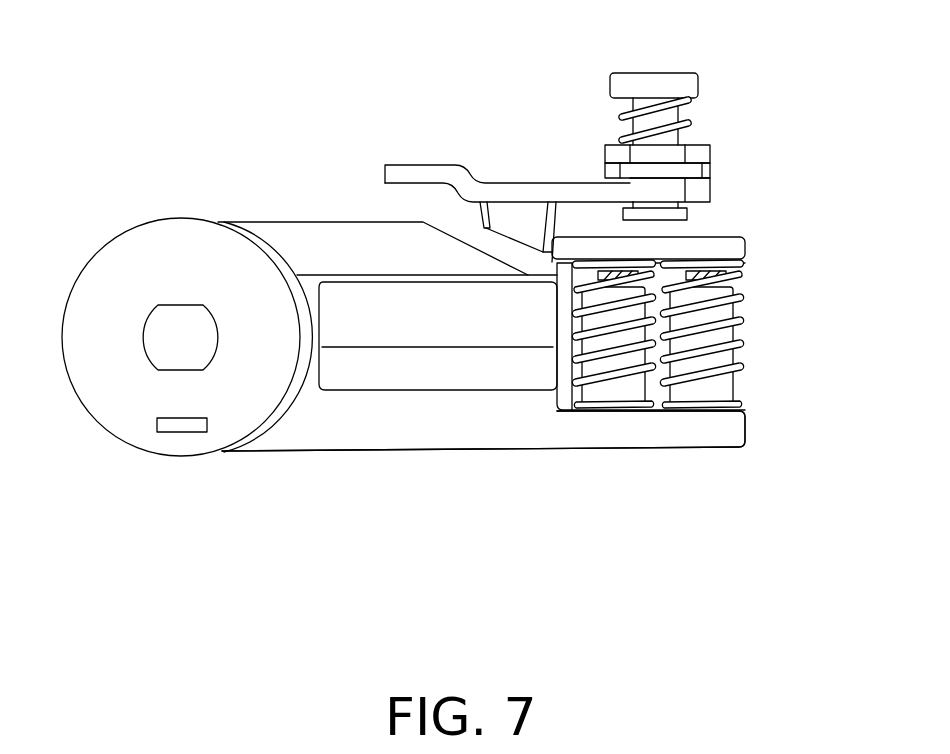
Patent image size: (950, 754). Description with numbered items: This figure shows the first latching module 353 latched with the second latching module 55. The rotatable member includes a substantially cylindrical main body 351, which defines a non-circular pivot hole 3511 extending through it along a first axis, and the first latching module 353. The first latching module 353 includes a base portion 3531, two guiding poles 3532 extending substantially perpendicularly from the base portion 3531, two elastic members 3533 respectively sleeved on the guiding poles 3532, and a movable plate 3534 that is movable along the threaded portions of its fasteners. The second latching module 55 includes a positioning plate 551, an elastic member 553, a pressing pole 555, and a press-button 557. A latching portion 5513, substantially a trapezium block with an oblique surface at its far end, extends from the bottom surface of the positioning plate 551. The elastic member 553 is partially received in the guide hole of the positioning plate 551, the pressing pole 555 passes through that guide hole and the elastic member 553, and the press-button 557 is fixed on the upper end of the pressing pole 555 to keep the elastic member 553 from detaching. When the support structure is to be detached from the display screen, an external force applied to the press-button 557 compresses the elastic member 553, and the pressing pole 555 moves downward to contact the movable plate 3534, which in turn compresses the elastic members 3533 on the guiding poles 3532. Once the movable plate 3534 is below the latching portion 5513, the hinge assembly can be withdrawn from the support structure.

The main body 351 is at (168, 253).
The non-circular pivot hole 3511 is at (190, 350).
The latching portion 5513 is at (515, 220).
The second latching module 55 is at (721, 121).
The positioning plate 551 is at (695, 177).
The elastic member 553 is at (688, 131).
The pressing pole 555 is at (667, 120).
The press-button 557 is at (662, 82).
The first latching module 353 is at (560, 338).
The base portion 3531 is at (528, 423).
The guiding pole 3532 is at (723, 337).
The elastic member 3533 is at (737, 298).
The movable plate 3534 is at (737, 247).